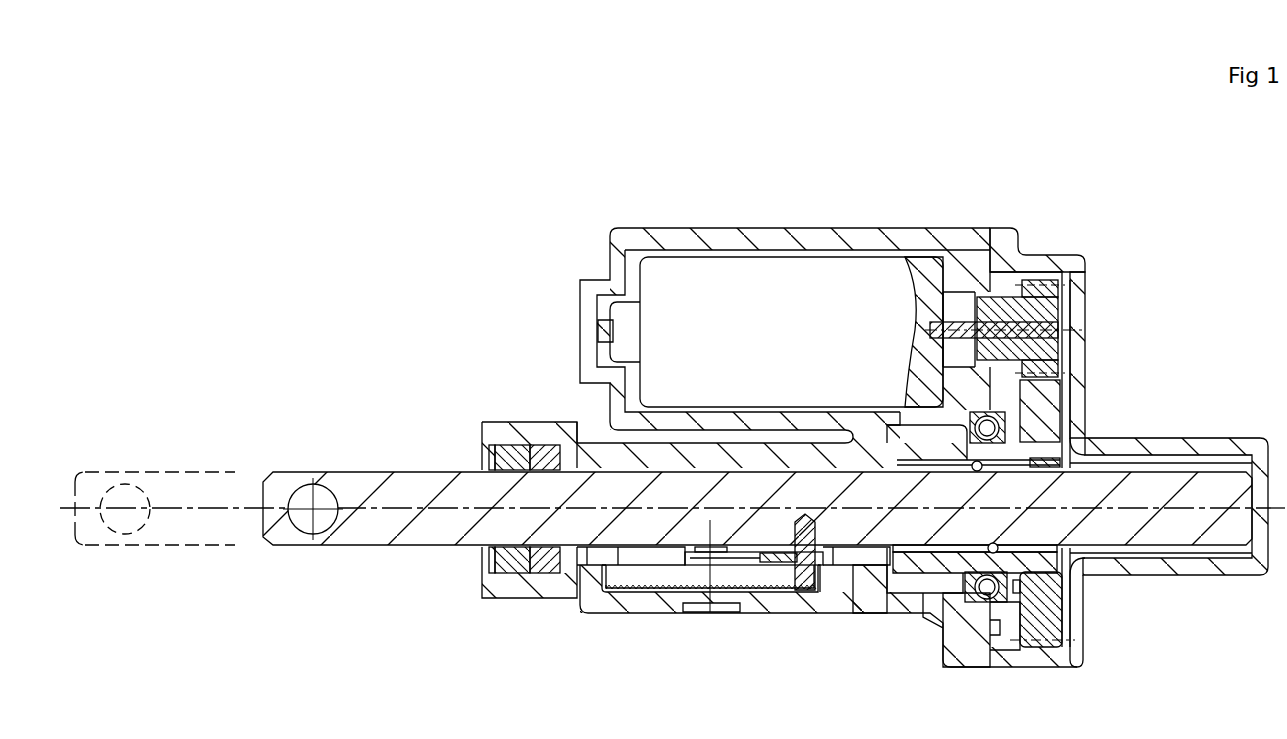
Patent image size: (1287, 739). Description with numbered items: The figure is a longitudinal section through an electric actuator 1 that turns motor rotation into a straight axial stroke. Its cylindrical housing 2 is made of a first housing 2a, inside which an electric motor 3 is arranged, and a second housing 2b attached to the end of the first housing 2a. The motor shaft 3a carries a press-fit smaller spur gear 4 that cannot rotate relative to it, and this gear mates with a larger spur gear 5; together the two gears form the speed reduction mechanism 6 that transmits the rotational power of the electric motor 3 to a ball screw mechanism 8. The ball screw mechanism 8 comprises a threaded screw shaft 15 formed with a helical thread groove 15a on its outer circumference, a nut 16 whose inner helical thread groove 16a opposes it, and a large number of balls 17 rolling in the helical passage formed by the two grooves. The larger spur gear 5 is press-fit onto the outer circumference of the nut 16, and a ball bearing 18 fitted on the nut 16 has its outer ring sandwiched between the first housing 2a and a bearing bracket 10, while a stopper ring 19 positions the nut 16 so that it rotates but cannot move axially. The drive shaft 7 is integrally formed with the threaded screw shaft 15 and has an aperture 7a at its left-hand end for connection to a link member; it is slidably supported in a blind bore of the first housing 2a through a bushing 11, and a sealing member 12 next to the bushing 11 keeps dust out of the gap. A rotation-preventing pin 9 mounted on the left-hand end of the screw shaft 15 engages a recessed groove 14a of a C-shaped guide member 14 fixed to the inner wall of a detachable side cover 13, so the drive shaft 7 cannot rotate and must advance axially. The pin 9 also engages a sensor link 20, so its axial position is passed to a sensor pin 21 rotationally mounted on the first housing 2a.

The electric actuator 1 is at (530, 218).
The housing 2 is at (831, 301).
The first housing 2a is at (957, 243).
The second housing 2b is at (1005, 243).
The electric motor 3 is at (747, 287).
The motor shaft 3a is at (1015, 328).
The smaller spur gear 4 is at (1050, 308).
The larger spur gear 5 is at (1052, 400).
The speed reduction mechanism 6 is at (1066, 272).
The drive shaft 7 is at (663, 503).
The aperture 7a is at (326, 530).
The ball screw mechanism 8 is at (905, 432).
The rotation-preventing pin 9 is at (810, 592).
The bearing bracket 10 is at (1022, 640).
The bushing 11 is at (542, 450).
The sealing member 12 is at (504, 450).
The side cover 13 is at (600, 612).
The guide member 14 is at (640, 592).
The recessed groove 14a is at (660, 577).
The threaded screw shaft 15 is at (1118, 526).
The helical thread groove 15a is at (1158, 462).
The nut 16 is at (922, 560).
The helical thread groove 16a is at (887, 552).
The balls 17 is at (994, 543).
The ball bearing 18 is at (1020, 588).
The stopper ring 19 is at (980, 594).
The sensor link 20 is at (752, 566).
The sensor pin 21 is at (698, 568).